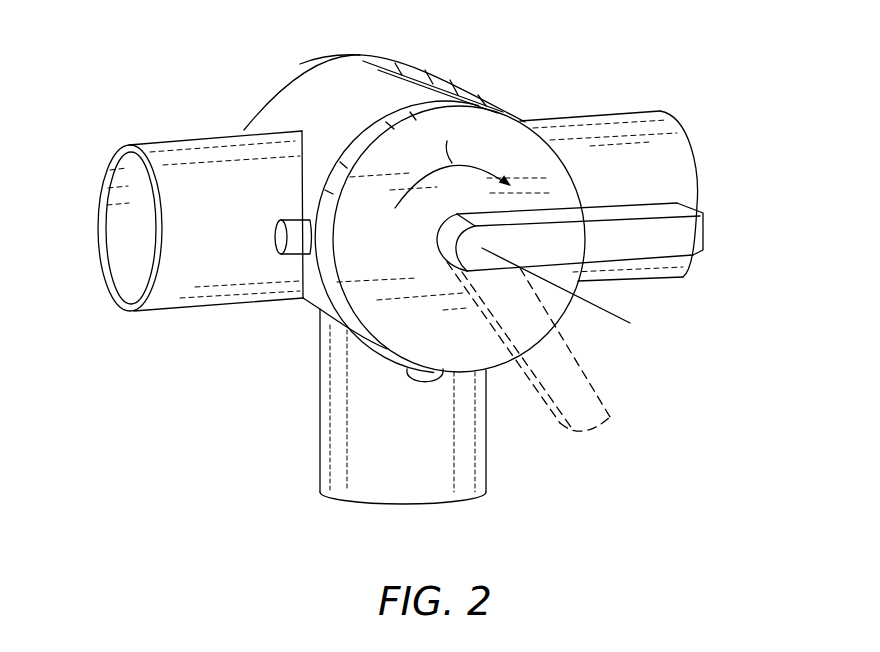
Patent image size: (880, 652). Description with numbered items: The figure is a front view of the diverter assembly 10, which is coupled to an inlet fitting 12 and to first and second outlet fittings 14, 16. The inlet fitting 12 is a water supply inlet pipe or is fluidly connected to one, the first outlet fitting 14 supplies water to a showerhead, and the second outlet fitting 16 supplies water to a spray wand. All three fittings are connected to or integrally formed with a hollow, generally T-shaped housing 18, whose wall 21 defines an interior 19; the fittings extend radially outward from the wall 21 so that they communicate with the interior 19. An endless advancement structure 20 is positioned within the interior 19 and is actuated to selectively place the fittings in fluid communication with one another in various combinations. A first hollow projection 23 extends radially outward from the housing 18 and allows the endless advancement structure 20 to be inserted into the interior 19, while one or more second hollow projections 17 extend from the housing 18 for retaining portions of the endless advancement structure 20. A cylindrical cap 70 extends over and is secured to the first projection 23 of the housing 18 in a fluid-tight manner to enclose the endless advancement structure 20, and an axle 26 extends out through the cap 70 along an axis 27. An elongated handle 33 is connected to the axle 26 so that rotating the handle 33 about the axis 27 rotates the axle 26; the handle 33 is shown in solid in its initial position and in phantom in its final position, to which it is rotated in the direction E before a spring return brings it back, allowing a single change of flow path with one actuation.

The diverter assembly 10 is at (182, 63).
The inlet fitting 12 is at (676, 280).
The first outlet fitting 14 is at (197, 308).
The second outlet fitting 16 is at (404, 504).
The second hollow projection 17 is at (279, 236).
The housing 18 is at (328, 78).
The interior 19 is at (388, 154).
The endless advancement structure 20 is at (388, 154).
The wall 21 is at (272, 100).
The first hollow projection 23 is at (418, 82).
The axle 26 is at (436, 241).
The axis 27 is at (603, 313).
The elongated handle 33 is at (703, 230).
The cap 70 is at (500, 122).